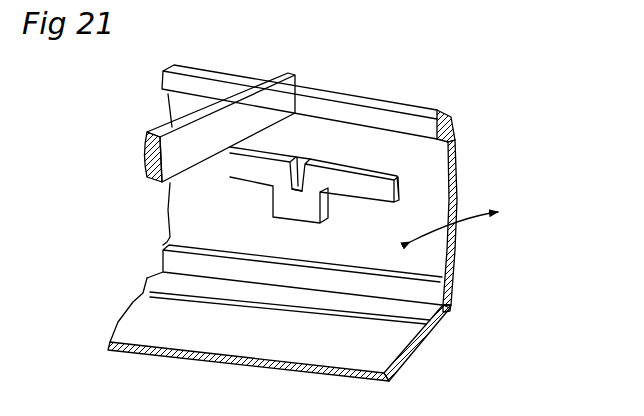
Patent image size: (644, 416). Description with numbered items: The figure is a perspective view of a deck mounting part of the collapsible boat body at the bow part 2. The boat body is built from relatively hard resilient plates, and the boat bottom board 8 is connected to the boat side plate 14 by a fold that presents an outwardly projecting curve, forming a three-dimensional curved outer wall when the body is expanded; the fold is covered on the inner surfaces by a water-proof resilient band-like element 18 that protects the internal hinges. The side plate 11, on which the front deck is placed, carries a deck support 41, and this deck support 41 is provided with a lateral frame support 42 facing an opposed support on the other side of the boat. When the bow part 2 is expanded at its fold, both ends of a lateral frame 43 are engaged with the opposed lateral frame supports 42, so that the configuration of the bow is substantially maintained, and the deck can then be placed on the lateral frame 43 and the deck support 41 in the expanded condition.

The bow part 2 is at (452, 108).
The side plate 11 is at (428, 182).
The water-proof resilient band-like element 18 is at (290, 300).
The boat side plate (fold) 14 is at (451, 308).
The boat bottom board 8 is at (377, 355).
The deck support 41 is at (319, 157).
The lateral frame support 42 is at (287, 178).
The lateral frame 43 is at (285, 145).